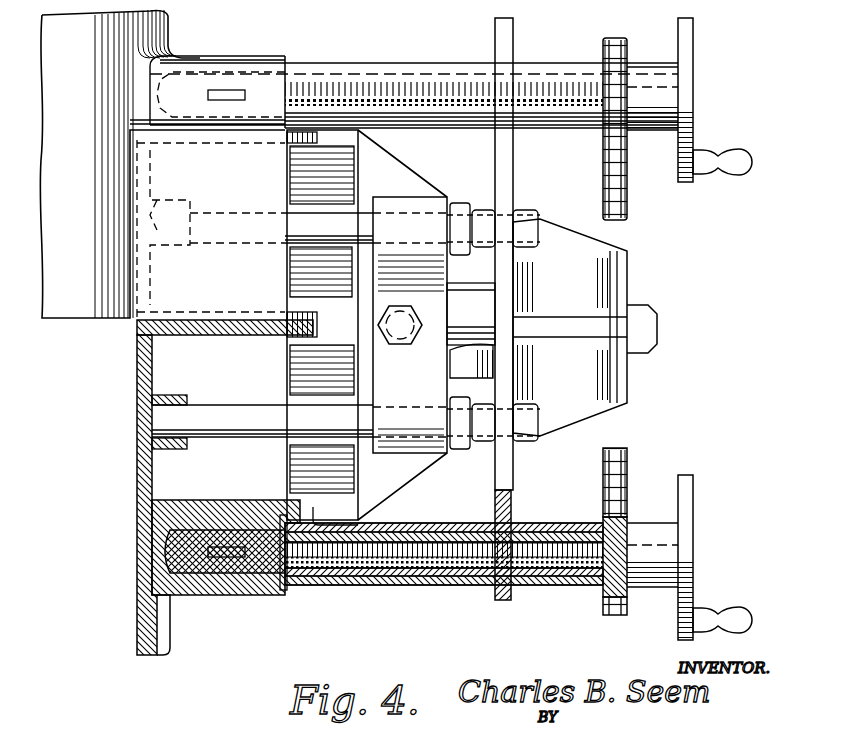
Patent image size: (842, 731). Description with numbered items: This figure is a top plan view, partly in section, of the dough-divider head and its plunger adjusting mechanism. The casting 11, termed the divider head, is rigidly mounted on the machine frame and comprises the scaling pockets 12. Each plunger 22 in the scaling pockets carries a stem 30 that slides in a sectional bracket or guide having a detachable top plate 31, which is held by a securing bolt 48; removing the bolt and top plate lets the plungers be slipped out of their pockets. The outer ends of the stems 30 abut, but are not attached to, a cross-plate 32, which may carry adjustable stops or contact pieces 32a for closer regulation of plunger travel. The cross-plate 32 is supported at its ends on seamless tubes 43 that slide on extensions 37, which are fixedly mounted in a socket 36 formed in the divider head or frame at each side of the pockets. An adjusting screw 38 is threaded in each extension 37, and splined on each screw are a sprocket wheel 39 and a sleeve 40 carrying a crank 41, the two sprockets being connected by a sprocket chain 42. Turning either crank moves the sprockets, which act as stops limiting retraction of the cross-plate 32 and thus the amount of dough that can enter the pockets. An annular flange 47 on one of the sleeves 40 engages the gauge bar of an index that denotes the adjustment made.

The casting 11 is at (80, 318).
The scaling pockets 12 is at (168, 495).
The plungers 22 is at (147, 306).
The stems 30 is at (362, 220).
The top plate 31 is at (402, 325).
The cross-plate 32 is at (507, 172).
The adjustable stops or contact pieces 32a is at (538, 222).
The socket 36 is at (163, 548).
The extensions 37 is at (260, 568).
The adjusting screws 38 is at (363, 563).
The sprocket wheel 39 is at (617, 44).
The sleeve 40 is at (655, 72).
The crank 41 is at (722, 165).
The sprocket chain 42 is at (622, 452).
The seamless tubes 43 is at (448, 77).
The annular flange 47 is at (688, 62).
The securing bolt 48 is at (390, 322).